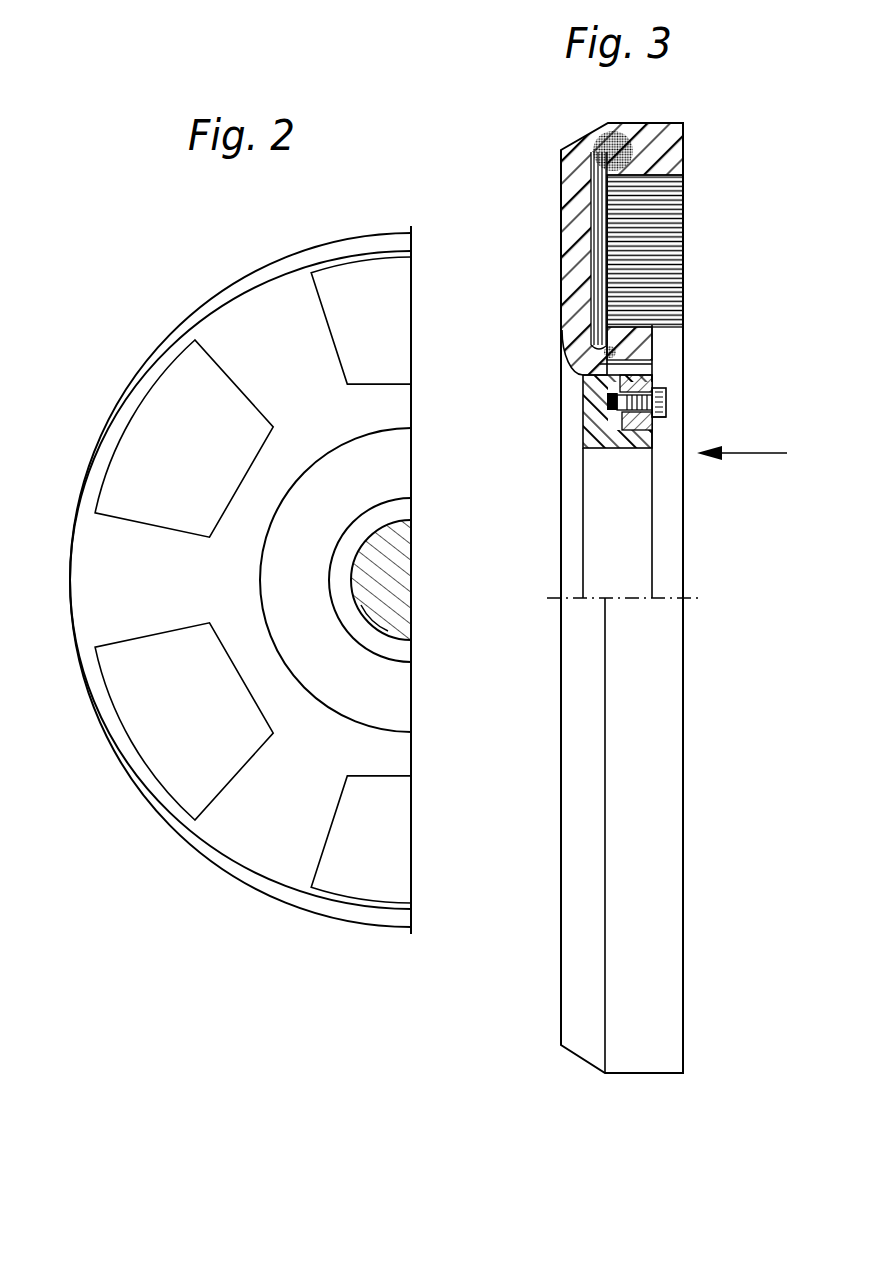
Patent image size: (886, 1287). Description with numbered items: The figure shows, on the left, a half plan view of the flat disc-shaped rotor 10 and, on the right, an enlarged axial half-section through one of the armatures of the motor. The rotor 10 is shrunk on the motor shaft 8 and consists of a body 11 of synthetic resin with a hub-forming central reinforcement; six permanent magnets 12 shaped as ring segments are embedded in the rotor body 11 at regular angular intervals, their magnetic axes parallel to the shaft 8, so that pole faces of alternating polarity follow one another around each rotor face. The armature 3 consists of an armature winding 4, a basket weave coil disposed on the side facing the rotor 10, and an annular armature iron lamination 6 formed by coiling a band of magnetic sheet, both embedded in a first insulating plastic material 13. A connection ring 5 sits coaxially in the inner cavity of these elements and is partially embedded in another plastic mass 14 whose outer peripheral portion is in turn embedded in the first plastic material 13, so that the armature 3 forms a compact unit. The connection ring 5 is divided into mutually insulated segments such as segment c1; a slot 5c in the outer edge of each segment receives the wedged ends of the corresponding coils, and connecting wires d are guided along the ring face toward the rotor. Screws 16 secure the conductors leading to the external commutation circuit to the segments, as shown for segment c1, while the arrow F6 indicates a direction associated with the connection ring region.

In FIG. 2, the rotor 10 is at (206, 296).
In FIG. 2, the rotor body 11 is at (273, 868).
In FIG. 2, the permanent magnets 12 is at (175, 395).
In FIG. 2, the motor shaft 8 is at (405, 593).
In FIG. 3, the armature 3 is at (551, 162).
In FIG. 3, the armature winding 4 is at (597, 249).
In FIG. 3, the first insulating plastic material 13 is at (577, 206).
In FIG. 3, the armature iron lamination 6 is at (671, 215).
In FIG. 3, the slot 5c is at (655, 360).
In FIG. 3, the second plastic material 14 is at (598, 437).
In FIG. 3, the screws 16 is at (666, 392).
In FIG. 3, the connecting conducting wires d is at (608, 403).
In FIG. 3, the segment c1 is at (655, 425).
In FIG. 3, the connection ring 5 is at (638, 498).
In FIG. 3, the force direction F6 is at (742, 440).